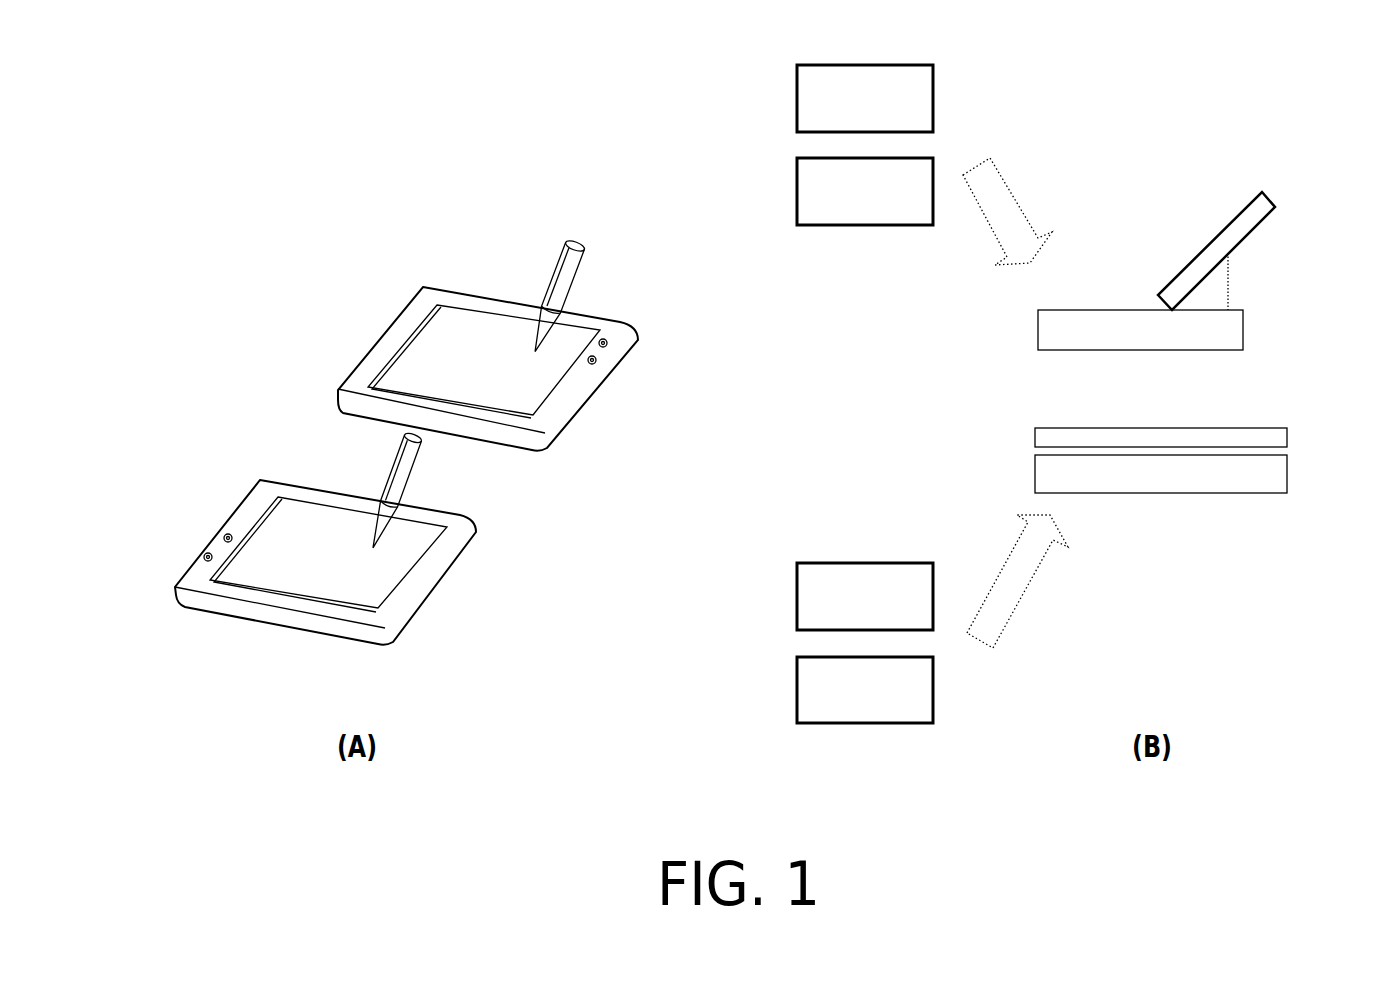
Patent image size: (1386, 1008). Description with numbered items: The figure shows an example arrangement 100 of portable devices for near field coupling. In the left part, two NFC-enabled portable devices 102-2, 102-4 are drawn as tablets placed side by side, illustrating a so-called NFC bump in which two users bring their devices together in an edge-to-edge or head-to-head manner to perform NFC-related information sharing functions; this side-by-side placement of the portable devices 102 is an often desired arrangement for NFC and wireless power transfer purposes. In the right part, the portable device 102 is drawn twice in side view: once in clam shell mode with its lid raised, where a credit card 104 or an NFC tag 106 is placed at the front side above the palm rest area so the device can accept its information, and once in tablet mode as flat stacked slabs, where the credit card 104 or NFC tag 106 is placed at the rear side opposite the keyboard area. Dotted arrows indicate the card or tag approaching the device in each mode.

The arrangement 100 is at (224, 102).
The portable device 102 is at (1243, 310).
The portable device 102-2 is at (377, 330).
The portable device 102-4 is at (213, 530).
The credit card 104 is at (850, 120).
The NFC tag 106 is at (850, 213).